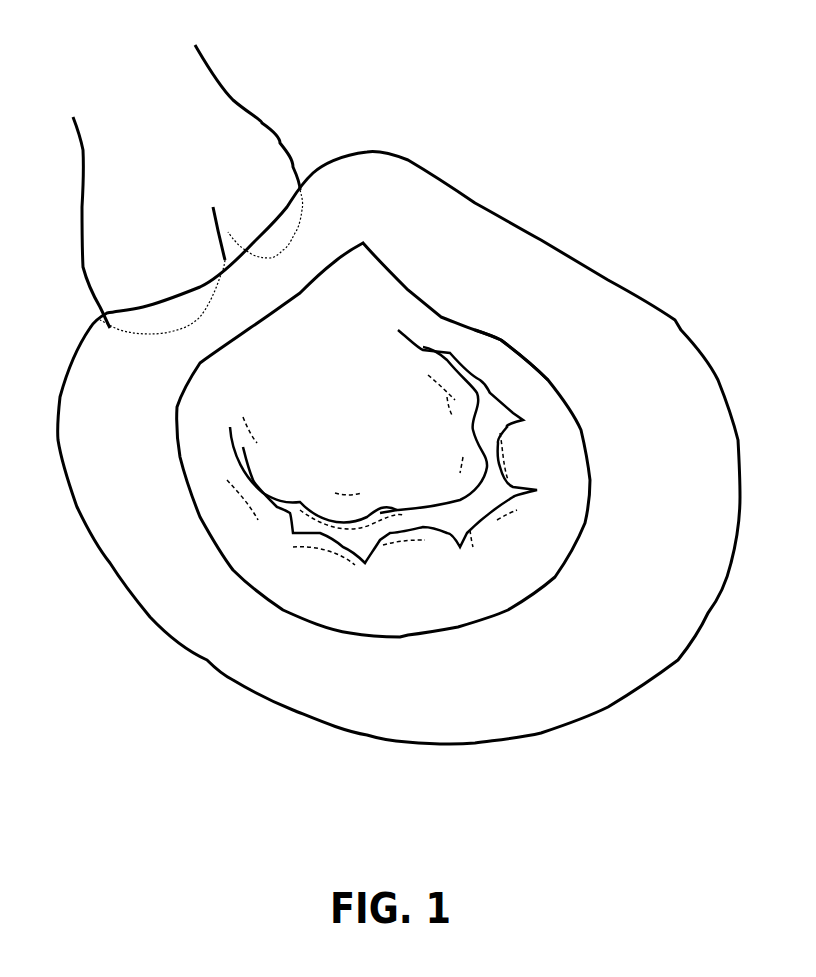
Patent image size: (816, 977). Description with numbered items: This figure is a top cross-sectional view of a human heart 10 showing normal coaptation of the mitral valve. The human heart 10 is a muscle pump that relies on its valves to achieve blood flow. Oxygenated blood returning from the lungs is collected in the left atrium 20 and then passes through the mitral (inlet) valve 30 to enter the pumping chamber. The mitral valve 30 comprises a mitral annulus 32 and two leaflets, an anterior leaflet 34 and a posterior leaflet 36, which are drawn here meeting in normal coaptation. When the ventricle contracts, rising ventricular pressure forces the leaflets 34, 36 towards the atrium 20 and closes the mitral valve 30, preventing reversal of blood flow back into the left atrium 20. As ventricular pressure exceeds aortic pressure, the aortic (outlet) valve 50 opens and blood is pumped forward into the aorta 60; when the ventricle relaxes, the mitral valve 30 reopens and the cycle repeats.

The human heart 10 is at (213, 705).
The left atrium 20 is at (543, 430).
The mitral valve 30 is at (390, 517).
The mitral annulus 32 is at (502, 342).
The anterior leaflet 34 is at (337, 412).
The posterior leaflet 36 is at (441, 573).
The aortic valve 50 is at (233, 240).
The aorta 60 is at (182, 154).